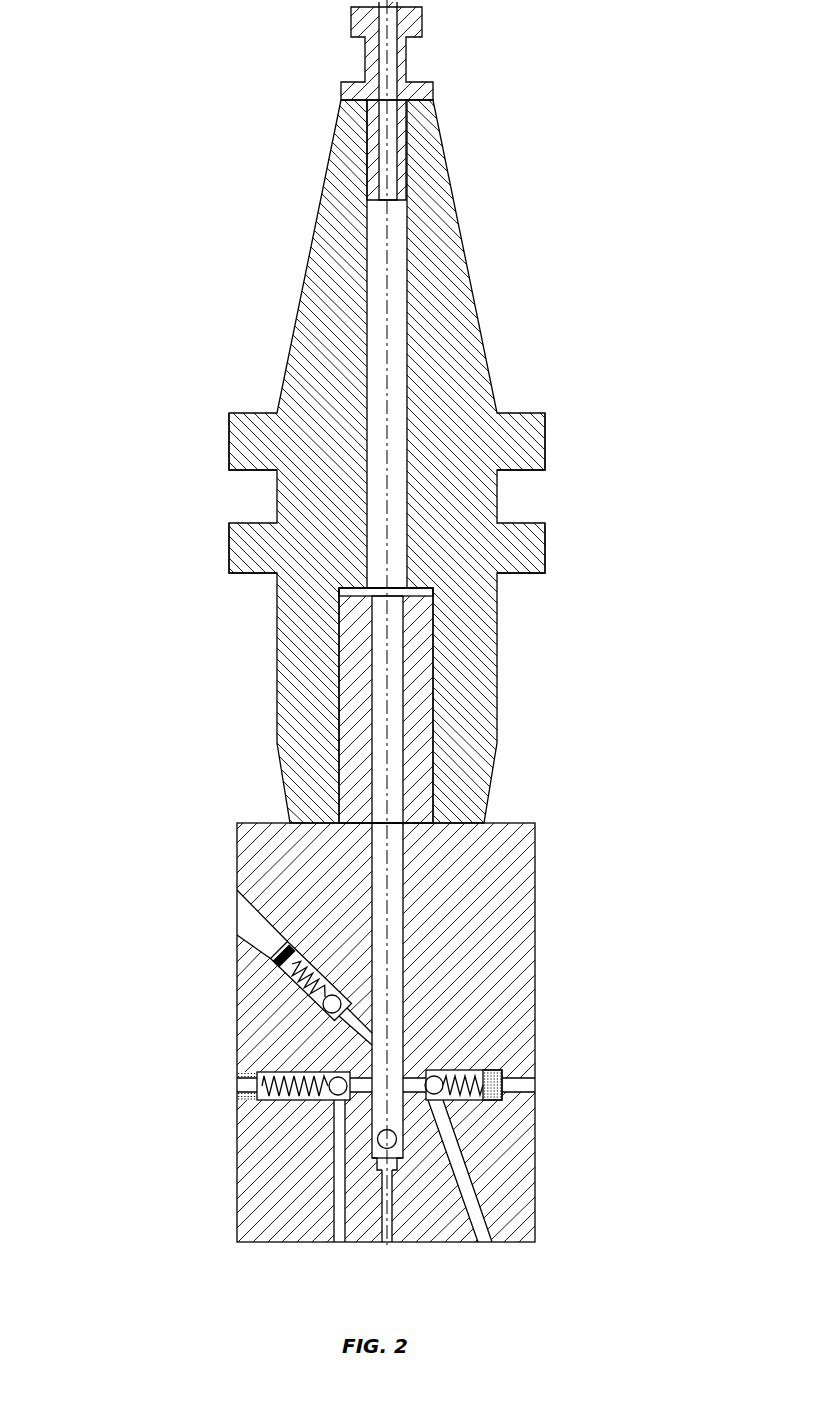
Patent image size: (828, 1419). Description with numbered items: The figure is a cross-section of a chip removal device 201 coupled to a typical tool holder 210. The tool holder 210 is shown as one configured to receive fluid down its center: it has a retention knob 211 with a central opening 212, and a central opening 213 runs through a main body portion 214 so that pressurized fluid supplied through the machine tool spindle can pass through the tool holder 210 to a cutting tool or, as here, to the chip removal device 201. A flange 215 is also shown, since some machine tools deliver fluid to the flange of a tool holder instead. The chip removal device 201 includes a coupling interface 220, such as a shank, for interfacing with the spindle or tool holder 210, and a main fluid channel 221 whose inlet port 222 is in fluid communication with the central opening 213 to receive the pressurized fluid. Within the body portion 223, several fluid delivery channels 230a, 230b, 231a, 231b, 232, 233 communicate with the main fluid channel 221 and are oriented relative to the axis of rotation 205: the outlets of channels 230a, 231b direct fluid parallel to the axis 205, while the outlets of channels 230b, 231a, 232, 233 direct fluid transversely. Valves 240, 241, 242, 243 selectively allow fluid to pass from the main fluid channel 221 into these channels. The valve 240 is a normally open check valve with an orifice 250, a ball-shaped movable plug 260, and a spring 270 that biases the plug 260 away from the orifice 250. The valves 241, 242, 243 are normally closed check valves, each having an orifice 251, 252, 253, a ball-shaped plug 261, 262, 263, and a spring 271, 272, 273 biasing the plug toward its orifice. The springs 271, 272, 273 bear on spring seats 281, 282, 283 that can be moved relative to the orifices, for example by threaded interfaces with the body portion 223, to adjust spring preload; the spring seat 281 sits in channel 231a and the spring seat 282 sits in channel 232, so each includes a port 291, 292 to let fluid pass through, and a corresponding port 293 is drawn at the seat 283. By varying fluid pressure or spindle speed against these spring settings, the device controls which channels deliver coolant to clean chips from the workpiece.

The chip removal device 201 is at (375, 947).
The axis of rotation 205 is at (385, 279).
The tool holder 210 is at (379, 412).
The retention knob 211 is at (423, 101).
The central opening 212 is at (392, 47).
The central opening 213 is at (392, 318).
The main body portion 214 is at (427, 461).
The flange 215 is at (545, 442).
The coupling interface 220 is at (449, 705).
The main fluid channel 221 is at (392, 895).
The inlet port 222 is at (392, 601).
The body portion 223 is at (518, 928).
The fluid delivery channel 230a is at (380, 1240).
The fluid delivery channel 230b is at (394, 1185).
The fluid delivery channel 231a is at (330, 1093).
The fluid delivery channel 231b is at (338, 1205).
The fluid delivery channel 232 is at (250, 922).
The fluid delivery channel 233 is at (485, 1217).
The valve 240 is at (368, 1156).
The valve 241 is at (260, 1139).
The valve 242 is at (249, 979).
The valve 243 is at (529, 1074).
The orifice 250 is at (395, 1168).
The orifice 251 is at (355, 1083).
The orifice 252 is at (353, 1013).
The orifice 253 is at (418, 1080).
The movable plug 260 is at (397, 1139).
The movable plug 261 is at (332, 1098).
The movable plug 262 is at (323, 1005).
The movable plug 263 is at (442, 1077).
The spring 270 is at (400, 1158).
The spring 271 is at (295, 1097).
The spring 272 is at (336, 1000).
The spring 273 is at (470, 1072).
The spring seat 281 is at (245, 1095).
The spring seat 282 is at (273, 966).
The spring seat 283 is at (507, 1080).
The port 291 is at (237, 1085).
The port 292 is at (272, 953).
The outlet port 293 is at (518, 1085).